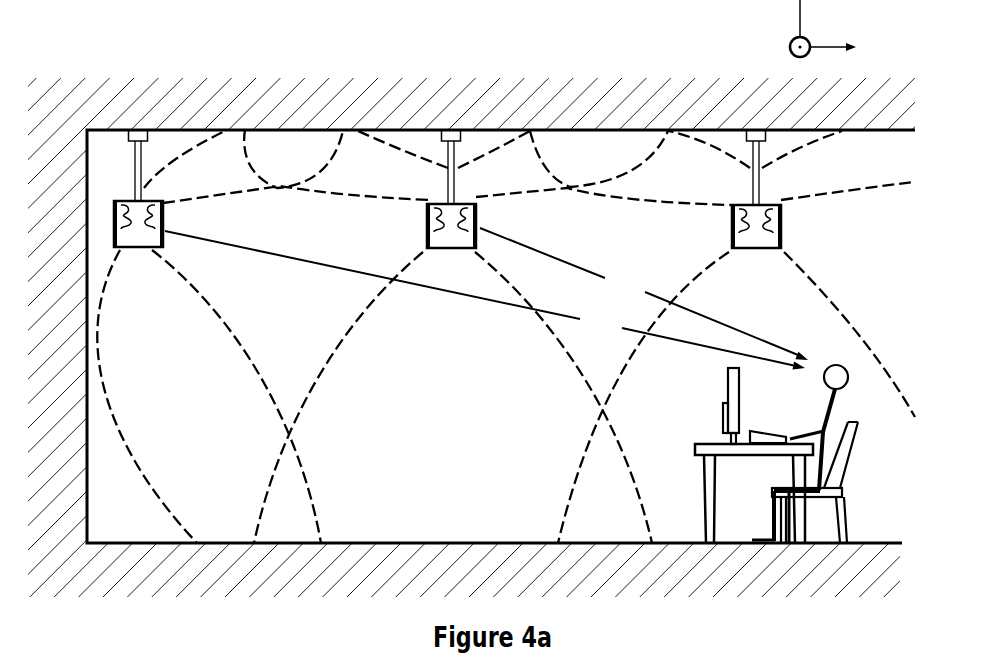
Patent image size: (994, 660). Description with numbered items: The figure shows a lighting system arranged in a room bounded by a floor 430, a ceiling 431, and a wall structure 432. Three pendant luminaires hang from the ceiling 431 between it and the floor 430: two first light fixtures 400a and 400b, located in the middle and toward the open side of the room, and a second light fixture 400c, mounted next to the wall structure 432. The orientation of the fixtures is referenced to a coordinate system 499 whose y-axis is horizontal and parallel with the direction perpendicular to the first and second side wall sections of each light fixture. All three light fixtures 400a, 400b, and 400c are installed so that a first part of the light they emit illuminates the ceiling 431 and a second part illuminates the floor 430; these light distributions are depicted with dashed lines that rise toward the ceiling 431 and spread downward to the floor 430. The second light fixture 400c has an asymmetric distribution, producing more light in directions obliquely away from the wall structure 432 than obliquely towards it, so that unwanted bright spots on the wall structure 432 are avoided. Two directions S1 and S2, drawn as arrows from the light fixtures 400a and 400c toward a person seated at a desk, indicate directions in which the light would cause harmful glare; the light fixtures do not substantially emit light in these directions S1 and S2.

The coordinate system 499 is at (856, 25).
The first light fixture 400a is at (450, 250).
The first light fixture 400b is at (757, 250).
The second light fixture 400c is at (163, 242).
The floor 430 is at (177, 542).
The ceiling 431 is at (607, 131).
The wall structure 432 is at (88, 427).
The direction S1 is at (644, 294).
The direction S2 is at (485, 300).